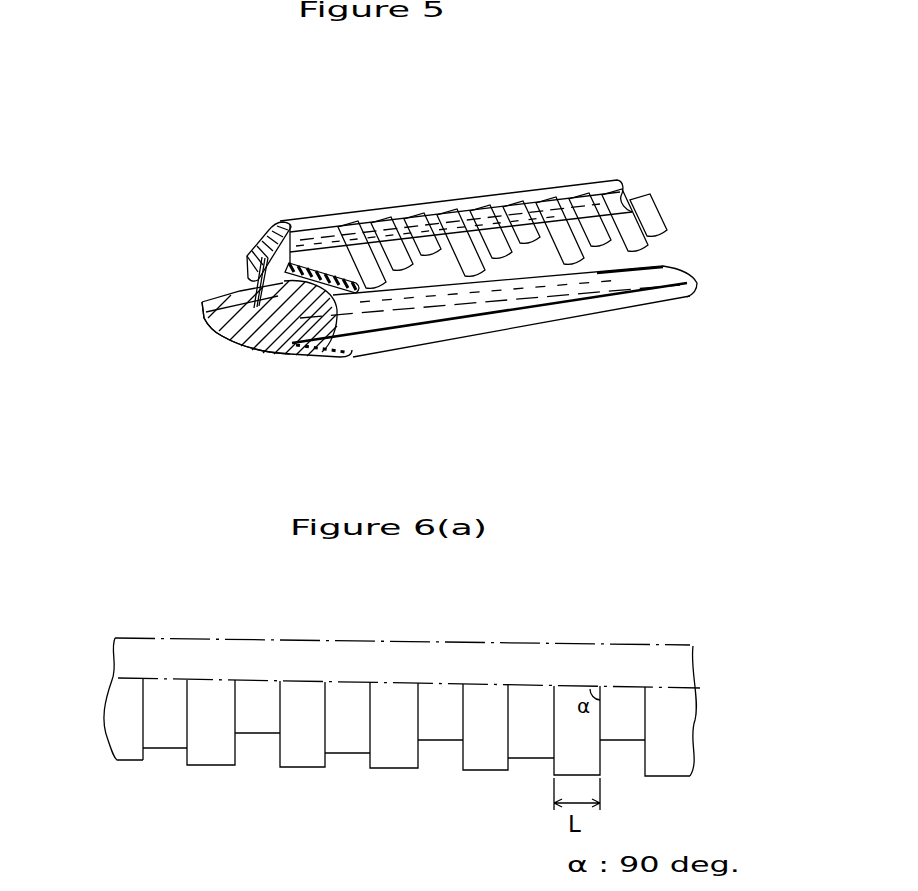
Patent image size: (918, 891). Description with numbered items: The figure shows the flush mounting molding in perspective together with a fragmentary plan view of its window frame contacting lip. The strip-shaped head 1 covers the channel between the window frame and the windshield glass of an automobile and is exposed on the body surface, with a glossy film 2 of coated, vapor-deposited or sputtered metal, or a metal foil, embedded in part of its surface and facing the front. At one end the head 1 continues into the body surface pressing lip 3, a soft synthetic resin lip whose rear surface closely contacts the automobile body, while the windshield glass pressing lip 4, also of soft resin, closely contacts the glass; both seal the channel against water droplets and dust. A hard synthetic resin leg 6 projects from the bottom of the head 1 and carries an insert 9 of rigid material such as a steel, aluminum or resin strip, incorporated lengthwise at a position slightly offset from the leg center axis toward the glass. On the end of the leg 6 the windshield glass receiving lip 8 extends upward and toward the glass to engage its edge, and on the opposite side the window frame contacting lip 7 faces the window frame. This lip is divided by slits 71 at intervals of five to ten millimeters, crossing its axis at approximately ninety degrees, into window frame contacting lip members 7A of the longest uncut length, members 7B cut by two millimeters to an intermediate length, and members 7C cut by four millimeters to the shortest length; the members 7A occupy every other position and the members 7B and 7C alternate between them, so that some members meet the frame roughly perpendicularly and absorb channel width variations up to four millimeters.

In FIG. 5, the head 1 is at (286, 356).
In FIG. 5, the glossy film 2 is at (232, 340).
In FIG. 5, the body surface pressing lip 3 is at (340, 354).
In FIG. 5, the windshield glass pressing lip 4 is at (202, 302).
In FIG. 5, the leg 6 is at (343, 348).
In FIG. 5, the window frame contacting lip 7 is at (433, 141).
In FIG. 5, the window frame contacting lip members having the longest length 7A is at (343, 270).
In FIG. 6A, the window frame contacting lip members having the longest length 7A is at (298, 705).
In FIG. 5, the window frame contacting lip members having the intermediate length 7B is at (380, 267).
In FIG. 6A, the window frame contacting lip members having the intermediate length 7B is at (165, 732).
In FIG. 5, the window frame contacting lip members having the shortest length 7C is at (413, 257).
In FIG. 6A, the window frame contacting lip members having the shortest length 7C is at (258, 723).
In FIG. 5, the windshield glass receiving lip 8 is at (246, 253).
In FIG. 5, the insert 9 is at (242, 262).
In FIG. 5, the slits 71 is at (457, 250).
In FIG. 6A, the slits 71 is at (640, 703).